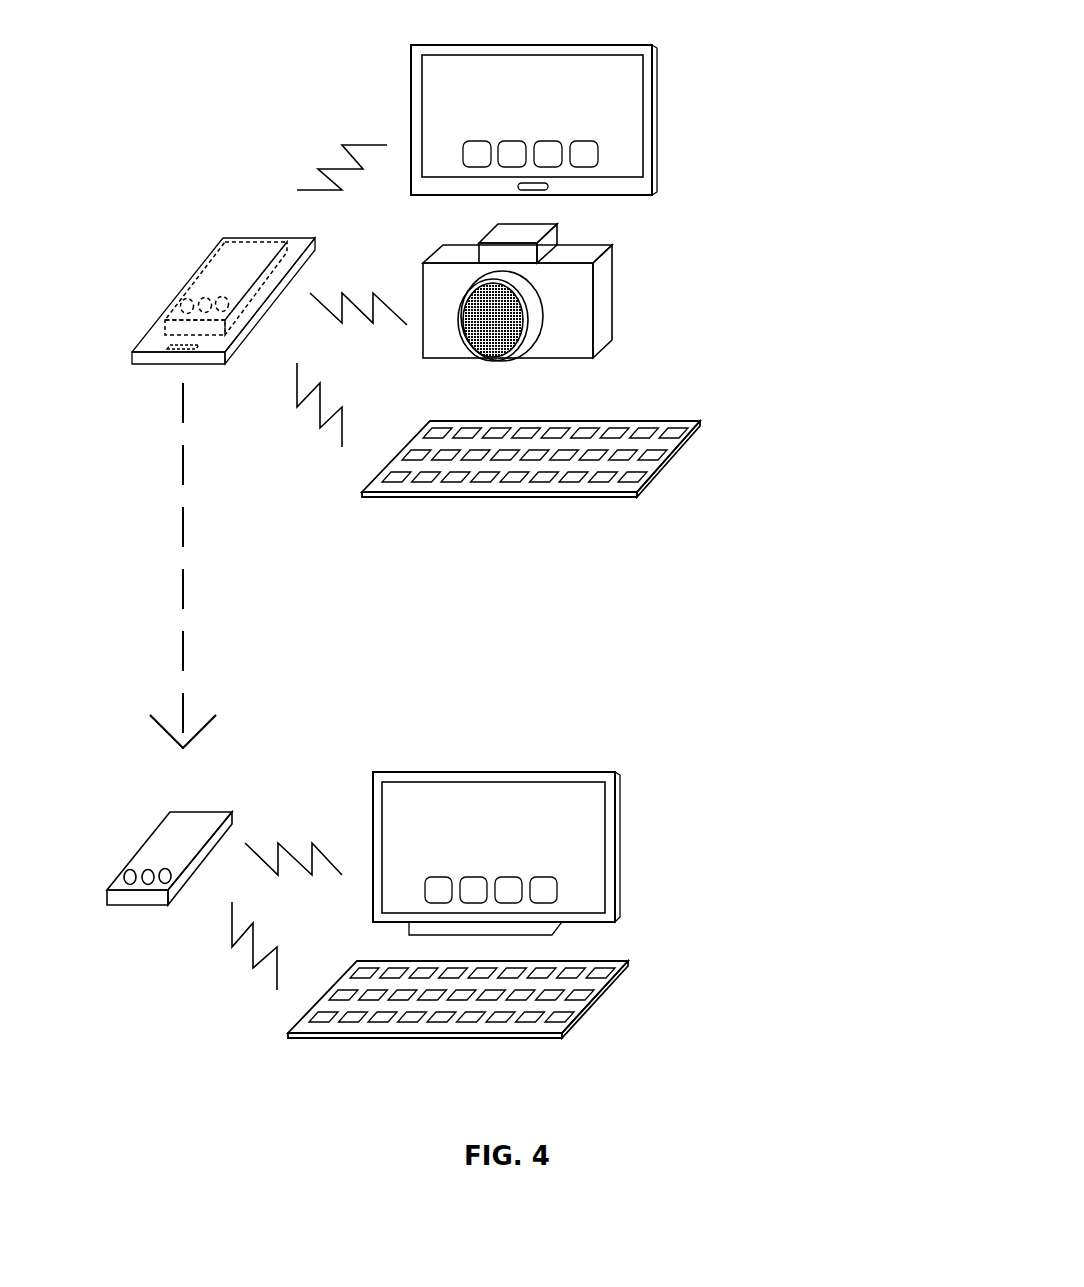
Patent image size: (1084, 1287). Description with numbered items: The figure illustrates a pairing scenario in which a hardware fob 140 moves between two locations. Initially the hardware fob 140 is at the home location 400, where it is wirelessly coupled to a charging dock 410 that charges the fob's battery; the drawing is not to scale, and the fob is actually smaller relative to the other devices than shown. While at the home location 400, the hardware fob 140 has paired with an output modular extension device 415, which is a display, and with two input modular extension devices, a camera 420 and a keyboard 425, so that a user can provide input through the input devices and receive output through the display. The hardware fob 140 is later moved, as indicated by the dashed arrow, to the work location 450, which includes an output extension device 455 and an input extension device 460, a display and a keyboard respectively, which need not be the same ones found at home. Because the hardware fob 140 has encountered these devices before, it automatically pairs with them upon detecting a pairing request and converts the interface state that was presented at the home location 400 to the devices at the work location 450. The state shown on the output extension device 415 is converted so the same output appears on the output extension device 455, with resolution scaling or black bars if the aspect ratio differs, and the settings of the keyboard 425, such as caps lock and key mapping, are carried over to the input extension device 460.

The home location 400 is at (793, 88).
The charging dock 410 is at (265, 237).
The hardware fob 140 is at (193, 290).
The output modular extension device 415 is at (672, 108).
The input modular extension device 420 is at (622, 298).
The input modular extension device 425 is at (700, 447).
The work location 450 is at (753, 780).
The output extension device 455 is at (633, 807).
The input extension device 460 is at (640, 980).